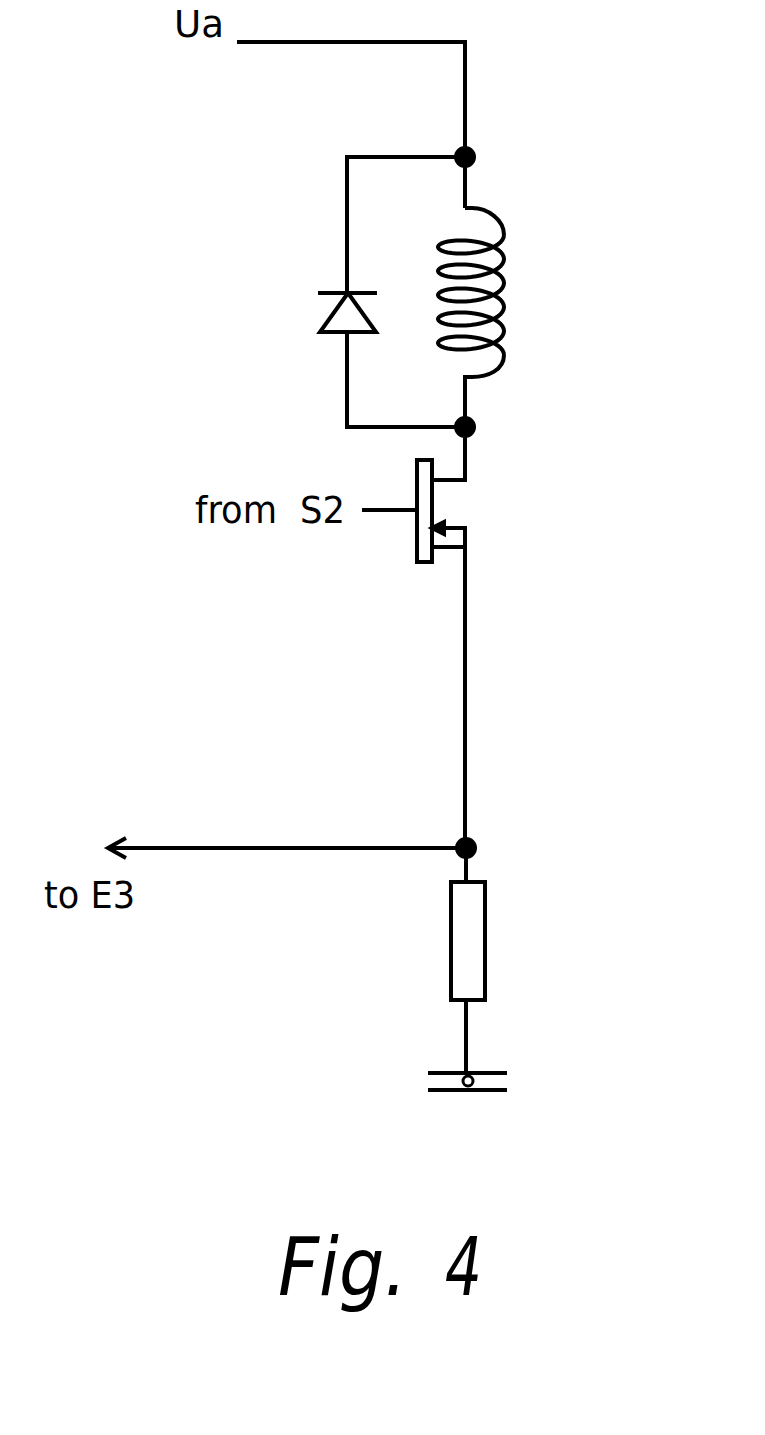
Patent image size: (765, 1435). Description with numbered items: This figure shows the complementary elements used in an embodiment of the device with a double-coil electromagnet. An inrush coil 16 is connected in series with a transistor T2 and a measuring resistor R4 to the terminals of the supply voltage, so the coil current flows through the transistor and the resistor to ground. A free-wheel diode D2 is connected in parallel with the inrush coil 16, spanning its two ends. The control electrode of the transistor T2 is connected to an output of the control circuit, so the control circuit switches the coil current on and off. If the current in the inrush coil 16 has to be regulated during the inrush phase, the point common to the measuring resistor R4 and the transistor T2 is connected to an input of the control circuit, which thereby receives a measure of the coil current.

The inrush coil 16 is at (487, 207).
The free-wheel diode D2 is at (311, 311).
The transistor T2 is at (447, 637).
The measuring resistor R4 is at (503, 960).